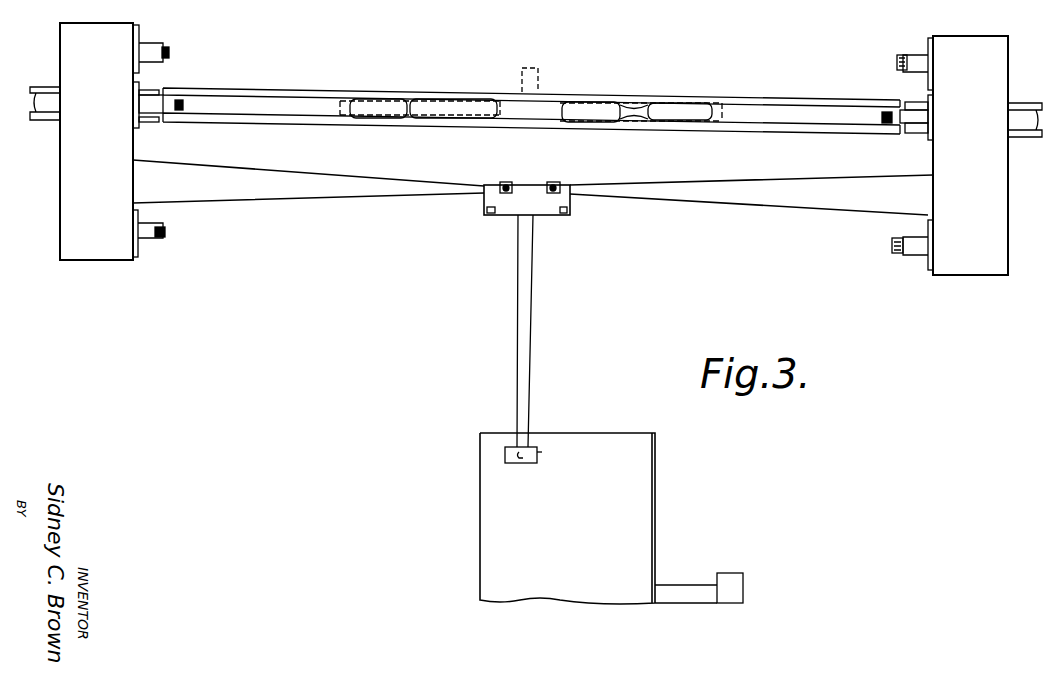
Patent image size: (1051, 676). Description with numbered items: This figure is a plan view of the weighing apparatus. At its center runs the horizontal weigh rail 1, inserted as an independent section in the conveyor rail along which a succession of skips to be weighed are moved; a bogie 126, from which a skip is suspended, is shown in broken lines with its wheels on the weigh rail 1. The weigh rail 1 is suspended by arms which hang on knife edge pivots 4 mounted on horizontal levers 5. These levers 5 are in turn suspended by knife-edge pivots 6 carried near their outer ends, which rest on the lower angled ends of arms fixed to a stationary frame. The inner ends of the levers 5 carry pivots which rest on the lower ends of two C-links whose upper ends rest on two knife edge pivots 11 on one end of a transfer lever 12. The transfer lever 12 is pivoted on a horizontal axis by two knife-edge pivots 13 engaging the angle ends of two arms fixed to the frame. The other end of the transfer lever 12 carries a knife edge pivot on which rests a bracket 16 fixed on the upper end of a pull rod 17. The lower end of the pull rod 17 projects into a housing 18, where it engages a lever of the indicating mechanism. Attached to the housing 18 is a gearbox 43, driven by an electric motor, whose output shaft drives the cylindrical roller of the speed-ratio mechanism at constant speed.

The weigh rail 1 is at (290, 104).
The knife edge pivots 4 is at (184, 100).
The horizontal levers 5 is at (278, 187).
The knife-edge pivots 6 is at (169, 52).
The knife edge pivots 11 is at (506, 182).
The transfer lever 12 is at (533, 332).
The knife-edge pivots 13 is at (490, 215).
The bracket 16 is at (513, 463).
The pull rod 17 is at (542, 458).
The housing 18 is at (567, 518).
The gearbox 43 is at (678, 593).
The bogie 126 is at (730, 113).